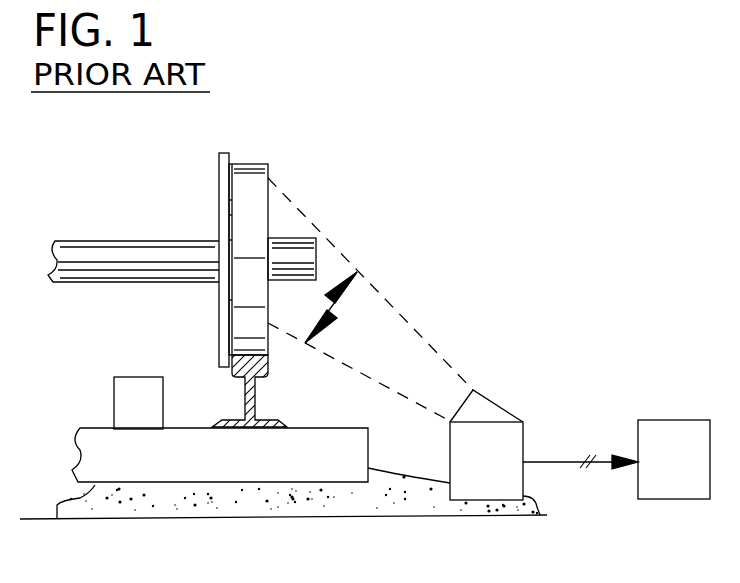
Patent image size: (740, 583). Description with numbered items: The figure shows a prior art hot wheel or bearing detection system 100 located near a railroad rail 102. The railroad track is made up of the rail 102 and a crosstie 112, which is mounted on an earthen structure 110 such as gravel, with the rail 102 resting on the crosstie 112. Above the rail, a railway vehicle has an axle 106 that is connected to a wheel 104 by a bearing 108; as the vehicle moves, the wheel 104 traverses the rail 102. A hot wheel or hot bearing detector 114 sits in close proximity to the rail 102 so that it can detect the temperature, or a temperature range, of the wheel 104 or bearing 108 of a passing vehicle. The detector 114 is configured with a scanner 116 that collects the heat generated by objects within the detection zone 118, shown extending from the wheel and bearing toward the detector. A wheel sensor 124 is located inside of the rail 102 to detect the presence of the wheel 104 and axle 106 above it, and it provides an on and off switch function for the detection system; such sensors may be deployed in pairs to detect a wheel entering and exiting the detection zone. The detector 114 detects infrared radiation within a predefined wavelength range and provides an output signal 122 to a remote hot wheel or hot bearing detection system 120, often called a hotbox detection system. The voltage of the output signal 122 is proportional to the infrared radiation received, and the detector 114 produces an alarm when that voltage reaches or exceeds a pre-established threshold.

The hot wheel or bearing detection system 100 is at (136, 154).
The railroad rail 102 is at (257, 397).
The wheel 104 is at (268, 197).
The axle 106 is at (158, 283).
The bearing 108 is at (317, 247).
The earthen structure 110 is at (252, 520).
The crosstie 112 is at (368, 460).
The hot wheel or hot bearing detector 114 is at (523, 437).
The scanner 116 is at (494, 405).
The detection zone 118 is at (332, 307).
The remote hot wheel or hot bearing detection system 120 is at (655, 499).
The output signal 122 is at (561, 465).
The wheel sensor 124 is at (113, 405).